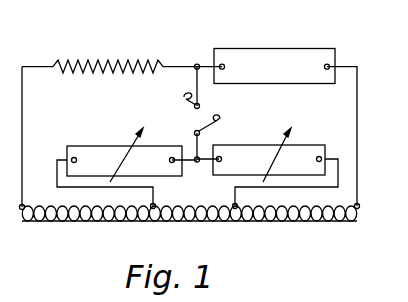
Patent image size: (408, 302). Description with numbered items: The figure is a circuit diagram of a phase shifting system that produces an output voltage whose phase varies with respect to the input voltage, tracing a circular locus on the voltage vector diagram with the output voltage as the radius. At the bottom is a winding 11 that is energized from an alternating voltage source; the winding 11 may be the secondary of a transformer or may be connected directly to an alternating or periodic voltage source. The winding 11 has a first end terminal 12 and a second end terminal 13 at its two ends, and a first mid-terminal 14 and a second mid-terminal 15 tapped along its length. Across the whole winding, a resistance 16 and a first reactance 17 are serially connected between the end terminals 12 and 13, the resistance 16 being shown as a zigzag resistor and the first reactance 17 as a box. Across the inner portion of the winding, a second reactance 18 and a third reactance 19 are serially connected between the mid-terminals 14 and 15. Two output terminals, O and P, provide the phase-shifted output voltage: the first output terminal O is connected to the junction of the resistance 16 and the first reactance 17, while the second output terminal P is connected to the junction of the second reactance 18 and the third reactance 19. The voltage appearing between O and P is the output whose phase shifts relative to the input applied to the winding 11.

The winding 11 is at (144, 222).
The first end terminal 12 is at (24, 205).
The second end terminal 13 is at (359, 205).
The first mid-terminal 14 is at (155, 204).
The second mid-terminal 15 is at (233, 204).
The resistance 16 is at (130, 63).
The first reactance 17 is at (284, 51).
The second reactance 18 is at (82, 146).
The third reactance 19 is at (302, 145).